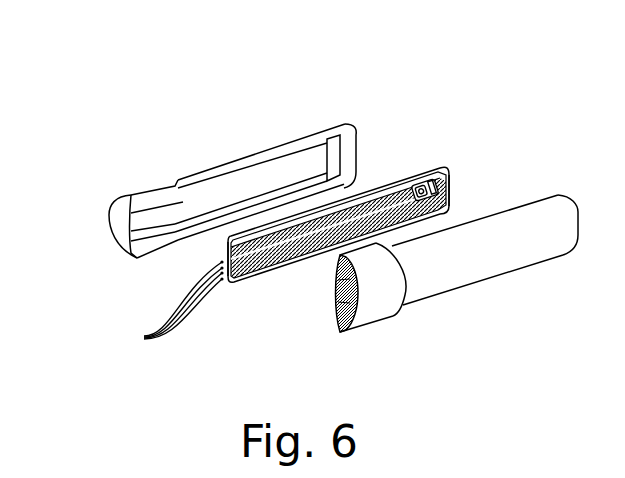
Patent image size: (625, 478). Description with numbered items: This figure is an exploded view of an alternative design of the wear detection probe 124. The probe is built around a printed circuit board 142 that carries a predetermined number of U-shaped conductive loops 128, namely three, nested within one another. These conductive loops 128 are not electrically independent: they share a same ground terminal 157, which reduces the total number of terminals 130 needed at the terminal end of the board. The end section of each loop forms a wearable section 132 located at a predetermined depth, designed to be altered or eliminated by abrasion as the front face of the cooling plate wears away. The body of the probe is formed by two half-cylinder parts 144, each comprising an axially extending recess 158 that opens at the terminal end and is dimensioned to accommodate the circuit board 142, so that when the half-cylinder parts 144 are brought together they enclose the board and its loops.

The wear detection probe 124 is at (493, 113).
The U-shaped conductive loops 128 is at (377, 193).
The terminals 130 is at (161, 304).
The wearable section 132 is at (448, 185).
The printed circuit board 142 is at (450, 173).
The half-cylinder parts 144 is at (245, 158).
The ground terminal 157 is at (222, 252).
The axially extending recess 158 is at (167, 211).